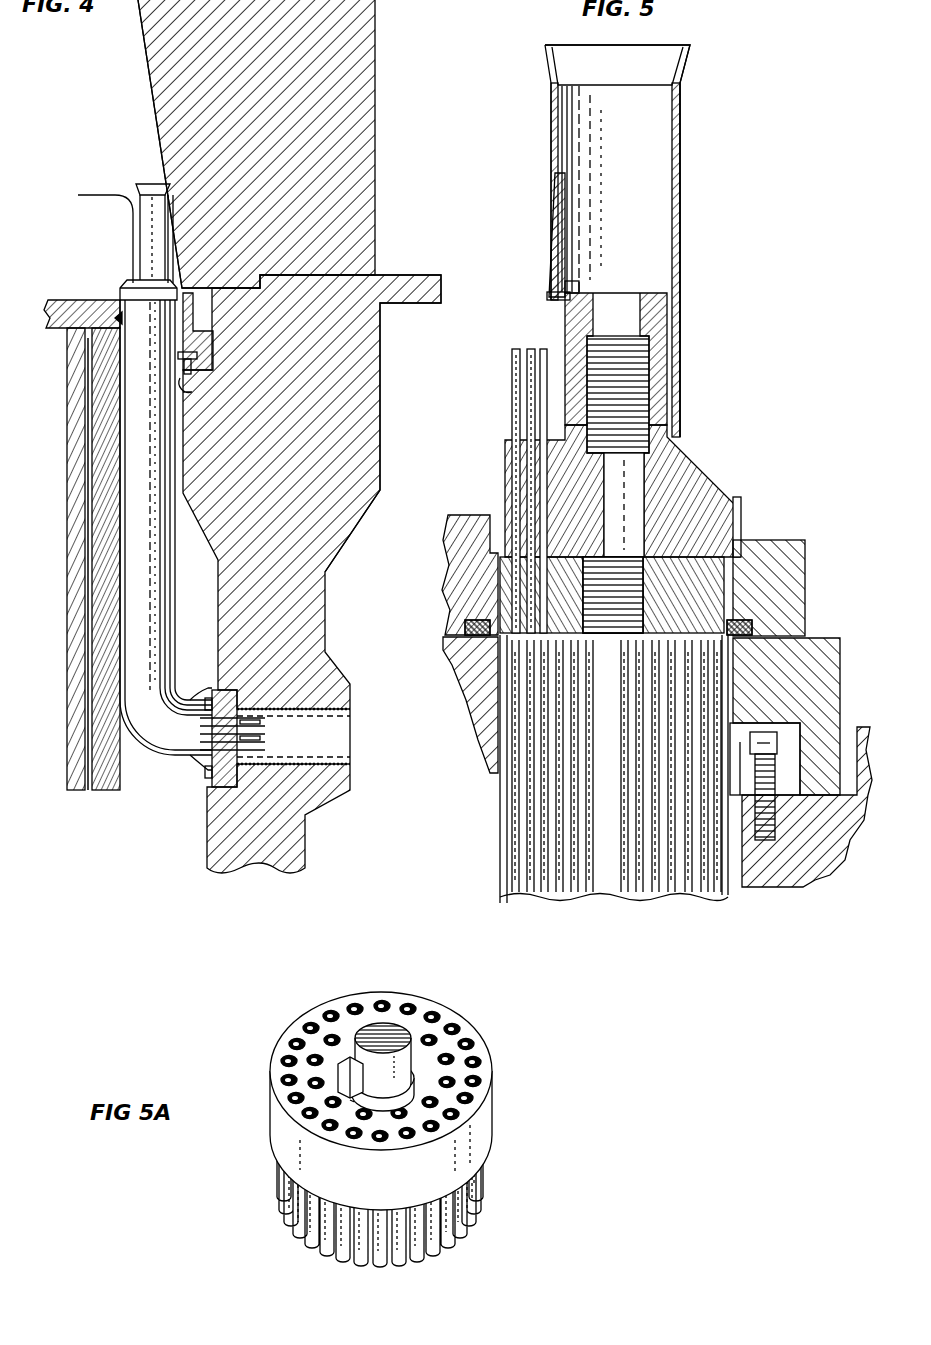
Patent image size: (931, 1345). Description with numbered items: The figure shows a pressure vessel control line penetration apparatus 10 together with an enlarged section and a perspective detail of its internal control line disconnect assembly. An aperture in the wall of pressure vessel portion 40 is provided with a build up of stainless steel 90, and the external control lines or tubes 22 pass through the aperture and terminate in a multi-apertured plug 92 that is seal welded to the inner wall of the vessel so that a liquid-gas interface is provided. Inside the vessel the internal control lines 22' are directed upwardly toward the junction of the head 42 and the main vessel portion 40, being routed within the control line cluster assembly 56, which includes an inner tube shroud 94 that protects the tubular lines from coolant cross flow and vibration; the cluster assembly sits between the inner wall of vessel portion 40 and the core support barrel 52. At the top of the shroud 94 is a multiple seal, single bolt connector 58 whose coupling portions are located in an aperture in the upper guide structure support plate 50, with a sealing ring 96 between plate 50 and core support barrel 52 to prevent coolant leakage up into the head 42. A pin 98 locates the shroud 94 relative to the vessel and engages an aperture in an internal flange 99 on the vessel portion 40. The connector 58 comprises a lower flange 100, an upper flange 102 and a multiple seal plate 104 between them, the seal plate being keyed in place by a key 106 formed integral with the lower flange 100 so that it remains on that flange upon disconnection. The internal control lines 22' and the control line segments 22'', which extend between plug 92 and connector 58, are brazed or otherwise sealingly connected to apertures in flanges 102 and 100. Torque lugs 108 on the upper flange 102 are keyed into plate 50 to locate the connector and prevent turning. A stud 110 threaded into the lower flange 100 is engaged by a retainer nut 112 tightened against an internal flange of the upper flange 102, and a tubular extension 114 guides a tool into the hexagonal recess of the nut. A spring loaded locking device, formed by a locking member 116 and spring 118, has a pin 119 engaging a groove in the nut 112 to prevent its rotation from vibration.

In FIG. 4, the sensor assembly 10 is at (405, 240).
In FIG. 4, the control line 22 is at (258, 739).
In FIG. 5A, the control line 22 is at (355, 1201).
In FIG. 4, the internal control line 22' is at (125, 219).
In FIG. 5, the internal control line 22' is at (510, 491).
In FIG. 5, the control line segment 22'' is at (614, 787).
In FIG. 4, the pressure vessel portion 40 is at (348, 410).
In FIG. 5, the pressure vessel portion 40 is at (815, 895).
In FIG. 4, the head 42 is at (358, 160).
In FIG. 4, the upper guide structure support plate 50 is at (63, 300).
In FIG. 5, the upper guide structure support plate 50 is at (800, 520).
In FIG. 4, the core support barrel 52 is at (116, 790).
In FIG. 5, the core support barrel 52 is at (822, 640).
In FIG. 4, the control line cluster assembly 56 is at (152, 553).
In FIG. 4, the multiple seal, single bolt connector 58 is at (122, 283).
In FIG. 5, the multiple seal, single bolt connector 58 is at (713, 442).
In FIG. 4, the stainless steel build up 90 is at (338, 722).
In FIG. 4, the multi-apertured plug 92 is at (212, 704).
In FIG. 4, the inner tube shroud 94 is at (178, 765).
In FIG. 5, the inner tube shroud 94 is at (504, 836).
In FIG. 4, the sealing ring 96 is at (113, 318).
In FIG. 5, the sealing ring 96 is at (463, 627).
In FIG. 4, the pin 98 is at (180, 362).
In FIG. 5, the pin 98 is at (798, 722).
In FIG. 4, the internal flange 99 is at (186, 393).
In FIG. 5, the internal flange 99 is at (790, 810).
In FIG. 5, the lower flange 100 is at (730, 594).
In FIG. 5A, the lower flange 100 is at (274, 1112).
In FIG. 5, the upper flange 102 is at (690, 486).
In FIG. 5, the multiple seal plate 104 is at (741, 516).
In FIG. 5A, the key 106 is at (340, 1064).
In FIG. 5, the torque lug 108 is at (805, 536).
In FIG. 5, the stud 110 is at (640, 371).
In FIG. 5A, the stud 110 is at (377, 1028).
In FIG. 5, the retainer nut 112 is at (660, 293).
In FIG. 5, the tubular extension 114 is at (678, 160).
In FIG. 5, the locking member 116 is at (552, 231).
In FIG. 5, the spring 118 is at (548, 302).
In FIG. 5, the pin 119 is at (578, 292).